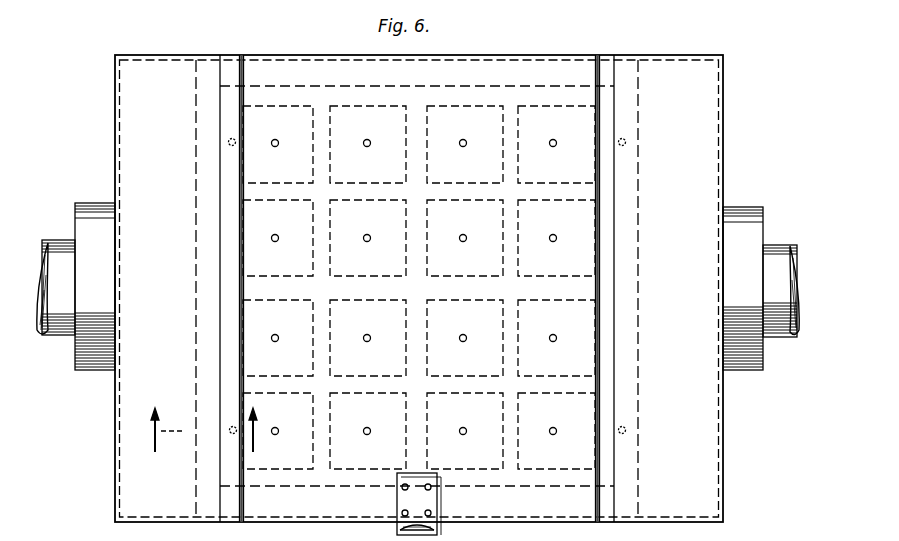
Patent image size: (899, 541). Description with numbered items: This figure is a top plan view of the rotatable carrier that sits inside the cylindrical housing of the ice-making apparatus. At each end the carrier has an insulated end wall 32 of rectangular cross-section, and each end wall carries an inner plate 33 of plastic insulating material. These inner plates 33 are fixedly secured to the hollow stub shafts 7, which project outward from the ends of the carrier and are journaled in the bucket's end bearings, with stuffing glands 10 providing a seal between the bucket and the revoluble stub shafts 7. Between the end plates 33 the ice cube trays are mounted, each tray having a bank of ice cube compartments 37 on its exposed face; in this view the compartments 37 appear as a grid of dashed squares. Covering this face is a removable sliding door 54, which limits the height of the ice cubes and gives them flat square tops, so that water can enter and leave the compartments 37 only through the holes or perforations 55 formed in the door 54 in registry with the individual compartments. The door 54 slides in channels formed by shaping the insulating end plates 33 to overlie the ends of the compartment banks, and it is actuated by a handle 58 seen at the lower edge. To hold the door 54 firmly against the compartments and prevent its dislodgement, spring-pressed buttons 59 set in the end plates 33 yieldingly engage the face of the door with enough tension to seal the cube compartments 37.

The hollow stub shaft 7 is at (60, 325).
The stuffing gland 10 is at (91, 212).
The insulated end wall 32 is at (178, 46).
The inner plate 33 is at (200, 287).
The ice cube compartment 37 is at (345, 106).
The removable sliding door 54 is at (522, 68).
The hole or perforation 55 is at (462, 147).
The handle 58 is at (425, 502).
The spring-pressed button 59 is at (227, 143).